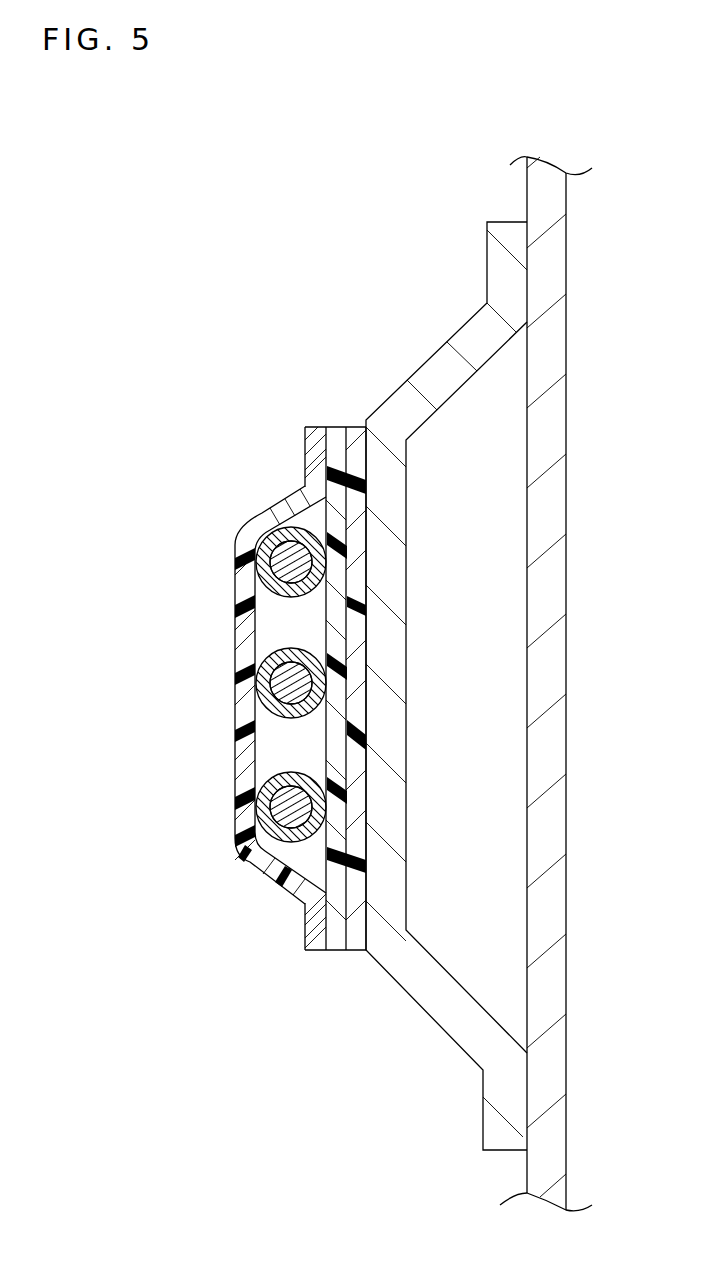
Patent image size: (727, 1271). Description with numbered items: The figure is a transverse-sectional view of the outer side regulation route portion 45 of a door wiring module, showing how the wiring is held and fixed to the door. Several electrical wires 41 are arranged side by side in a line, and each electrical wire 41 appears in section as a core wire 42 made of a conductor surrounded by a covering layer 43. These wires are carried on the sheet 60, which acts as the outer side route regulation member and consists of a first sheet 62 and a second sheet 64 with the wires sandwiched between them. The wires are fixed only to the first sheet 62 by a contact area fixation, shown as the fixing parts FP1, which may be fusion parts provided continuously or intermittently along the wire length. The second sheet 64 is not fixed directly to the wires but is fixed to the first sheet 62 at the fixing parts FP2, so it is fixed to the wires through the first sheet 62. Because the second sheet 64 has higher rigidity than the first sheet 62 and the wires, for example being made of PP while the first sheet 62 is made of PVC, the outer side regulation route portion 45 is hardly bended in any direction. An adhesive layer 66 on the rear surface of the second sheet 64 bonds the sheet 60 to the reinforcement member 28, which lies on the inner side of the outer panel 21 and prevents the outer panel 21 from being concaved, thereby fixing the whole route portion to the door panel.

The outer side regulation route portion 45 is at (225, 257).
The outer panel 21 is at (550, 528).
The reinforcement member 28 is at (420, 385).
The sheet 60 is at (355, 1011).
The first sheet 62 is at (303, 951).
The second sheet 64 is at (333, 951).
The adhesive layer 66 is at (355, 951).
The electrical wire 41 is at (170, 578).
The core wire 42 is at (262, 588).
The covering layer 43 is at (270, 608).
The fixing part FP1 is at (250, 563).
The fixing part FP2 is at (320, 453).